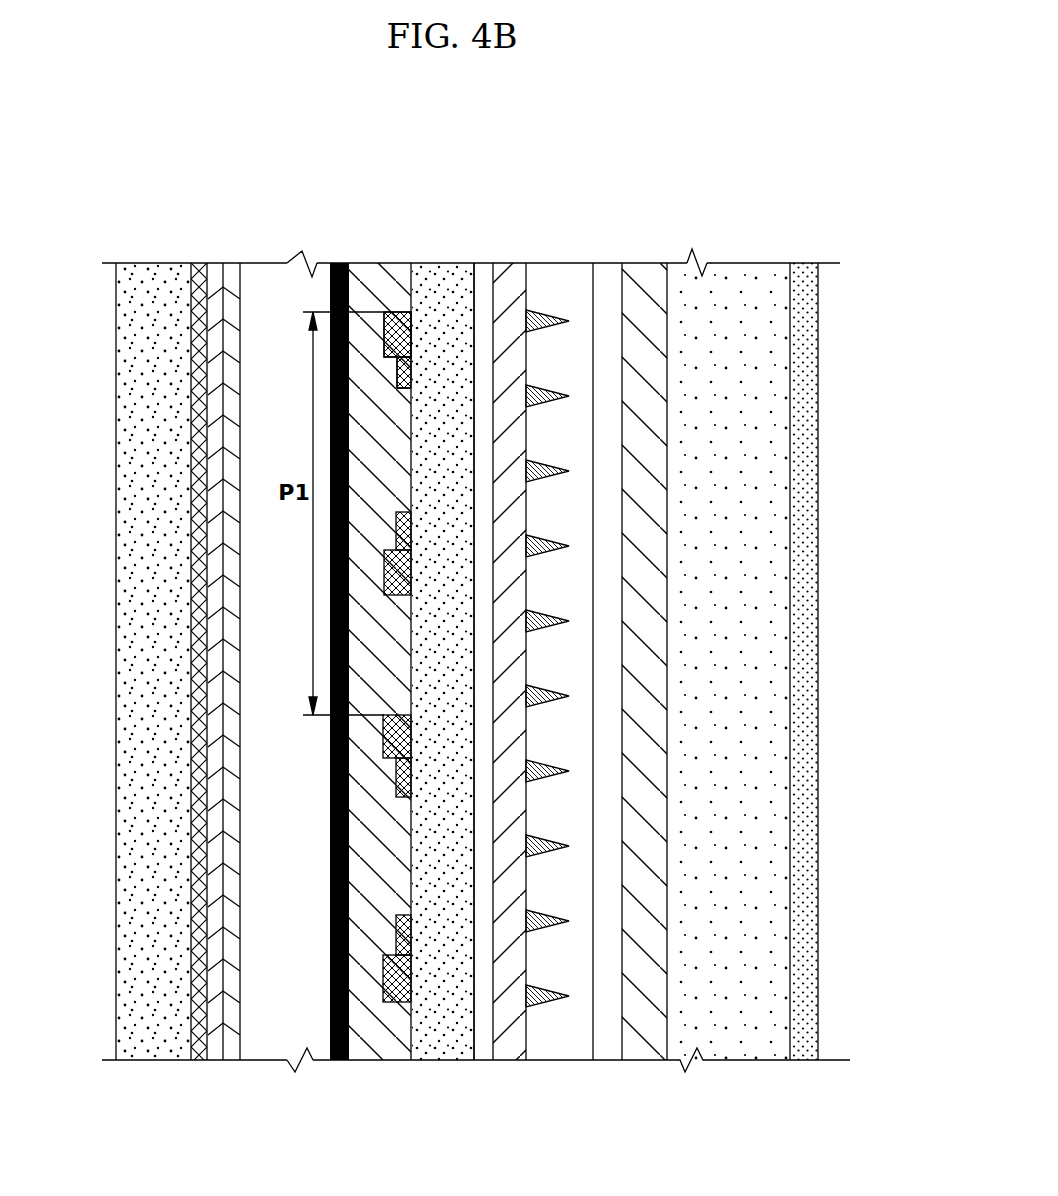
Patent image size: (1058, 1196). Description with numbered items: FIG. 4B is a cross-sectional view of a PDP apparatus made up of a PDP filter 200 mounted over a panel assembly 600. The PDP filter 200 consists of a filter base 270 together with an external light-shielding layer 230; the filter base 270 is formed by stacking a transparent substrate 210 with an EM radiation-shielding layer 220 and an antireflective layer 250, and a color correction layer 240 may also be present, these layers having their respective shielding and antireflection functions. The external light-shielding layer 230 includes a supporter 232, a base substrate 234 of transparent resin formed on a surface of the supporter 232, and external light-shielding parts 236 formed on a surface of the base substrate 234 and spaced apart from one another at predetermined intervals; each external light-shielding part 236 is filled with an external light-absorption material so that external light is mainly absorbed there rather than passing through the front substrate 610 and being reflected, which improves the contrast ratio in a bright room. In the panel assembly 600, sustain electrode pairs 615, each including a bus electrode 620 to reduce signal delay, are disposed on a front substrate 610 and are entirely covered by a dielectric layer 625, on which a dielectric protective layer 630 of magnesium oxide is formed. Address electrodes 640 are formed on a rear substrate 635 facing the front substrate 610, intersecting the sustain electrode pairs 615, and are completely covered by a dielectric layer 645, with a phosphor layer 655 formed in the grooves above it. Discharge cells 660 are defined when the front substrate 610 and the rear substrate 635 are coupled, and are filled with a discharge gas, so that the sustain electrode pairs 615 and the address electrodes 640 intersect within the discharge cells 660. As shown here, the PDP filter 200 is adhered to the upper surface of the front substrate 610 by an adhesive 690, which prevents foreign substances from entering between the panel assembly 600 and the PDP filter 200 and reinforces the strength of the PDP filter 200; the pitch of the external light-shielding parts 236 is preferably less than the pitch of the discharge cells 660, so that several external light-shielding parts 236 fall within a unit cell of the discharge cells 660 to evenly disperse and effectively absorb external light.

The PDP filter 200 is at (490, 1075).
The transparent substrate 210 is at (747, 262).
The EM radiation-shielding layer 220 is at (650, 262).
The external light-shielding layer 230 is at (655, 144).
The supporter 232 is at (612, 270).
The base substrate 234 is at (577, 272).
The external light-shielding part 236 is at (552, 297).
The color correction layer 240 is at (503, 287).
The antireflective layer 250 is at (812, 265).
The filter base 270 is at (807, 180).
The panel assembly 600 is at (465, 1075).
The front substrate 610 is at (458, 273).
The sustain electrode pairs 615 is at (438, 277).
The bus electrode 620 is at (393, 297).
The dielectric layer 625 is at (420, 310).
The dielectric protective layer 630 is at (340, 260).
The rear substrate 635 is at (145, 273).
The address electrodes 640 is at (200, 263).
The dielectric layer 645 is at (215, 262).
The phosphor layer 655 is at (232, 267).
The discharge cells 660 is at (288, 263).
The adhesive 690 is at (482, 1063).